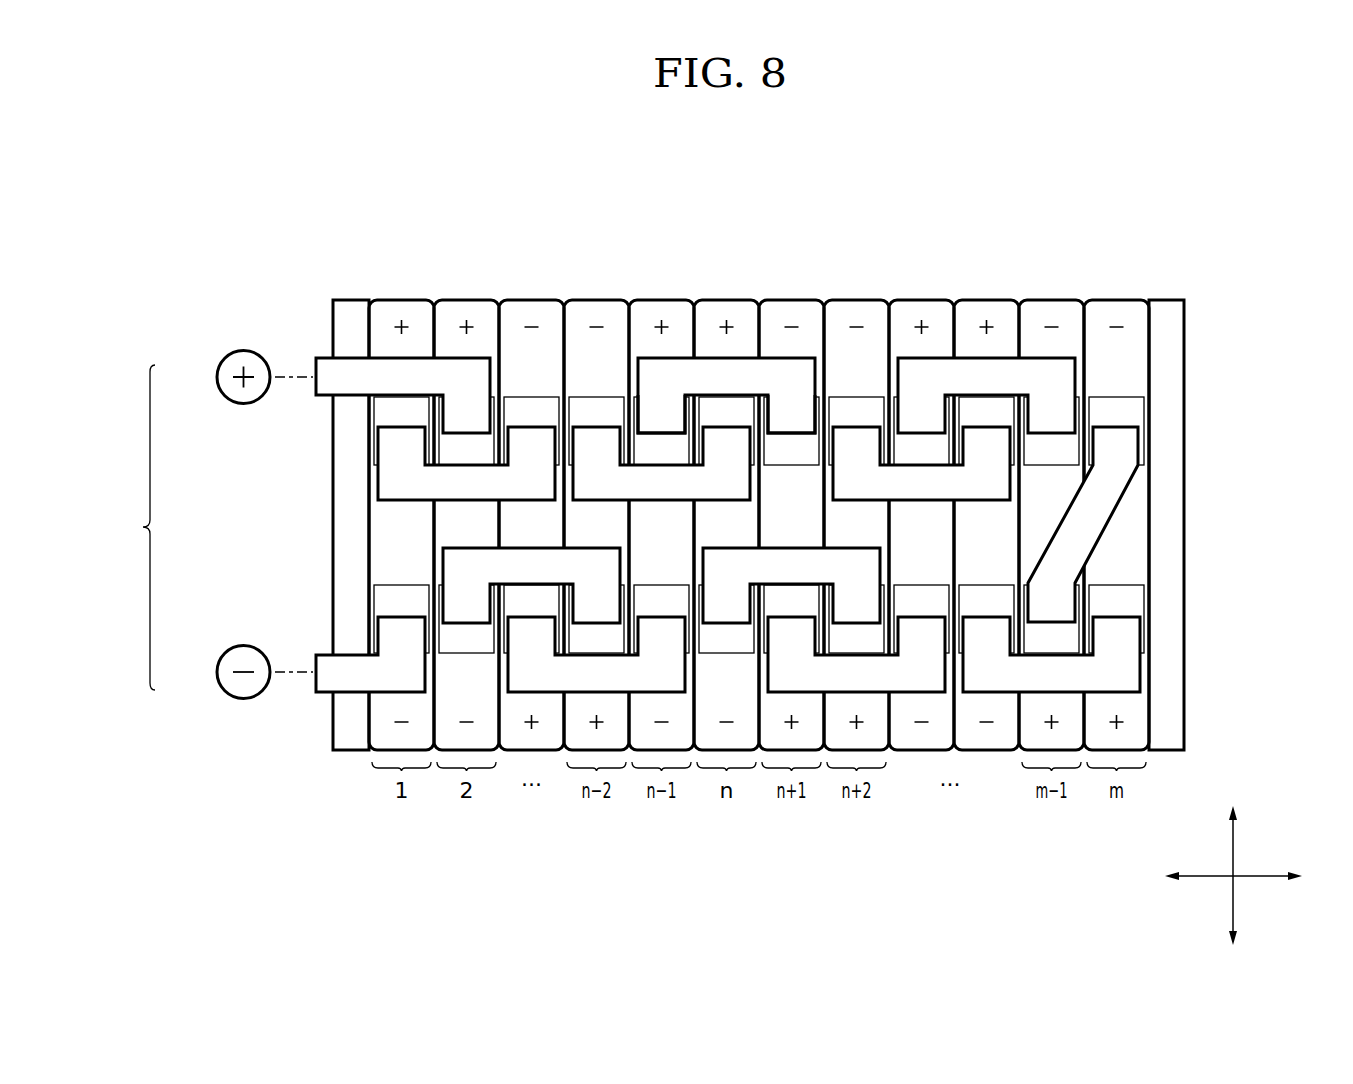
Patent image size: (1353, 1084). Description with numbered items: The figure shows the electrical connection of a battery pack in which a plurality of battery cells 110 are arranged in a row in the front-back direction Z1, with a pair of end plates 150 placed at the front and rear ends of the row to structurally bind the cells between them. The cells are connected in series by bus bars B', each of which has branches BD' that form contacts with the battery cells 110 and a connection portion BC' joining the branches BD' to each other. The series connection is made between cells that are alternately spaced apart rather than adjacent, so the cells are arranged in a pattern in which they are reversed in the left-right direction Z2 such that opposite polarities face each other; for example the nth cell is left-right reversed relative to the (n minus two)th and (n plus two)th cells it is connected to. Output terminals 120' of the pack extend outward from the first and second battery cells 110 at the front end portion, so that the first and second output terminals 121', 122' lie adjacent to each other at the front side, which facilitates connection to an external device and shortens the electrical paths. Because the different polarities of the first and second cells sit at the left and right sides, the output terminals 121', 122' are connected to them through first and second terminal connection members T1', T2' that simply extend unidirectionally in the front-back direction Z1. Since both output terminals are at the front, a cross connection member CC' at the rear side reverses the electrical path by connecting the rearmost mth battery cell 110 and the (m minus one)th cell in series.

The battery cell 110 is at (923, 305).
The end plate 150 is at (1172, 367).
The output terminal 120' is at (129, 527).
The first output terminal 121' is at (235, 672).
The second output terminal 122' is at (235, 377).
The first terminal connection member T1' is at (362, 710).
The second terminal connection member T2' is at (394, 335).
The bus bar B' is at (721, 311).
The connection portion BC' is at (726, 336).
The branch BD' is at (723, 336).
The cross connection member CC' is at (1138, 524).
The front-back direction Z1 is at (1220, 877).
The left-right direction Z2 is at (1234, 864).